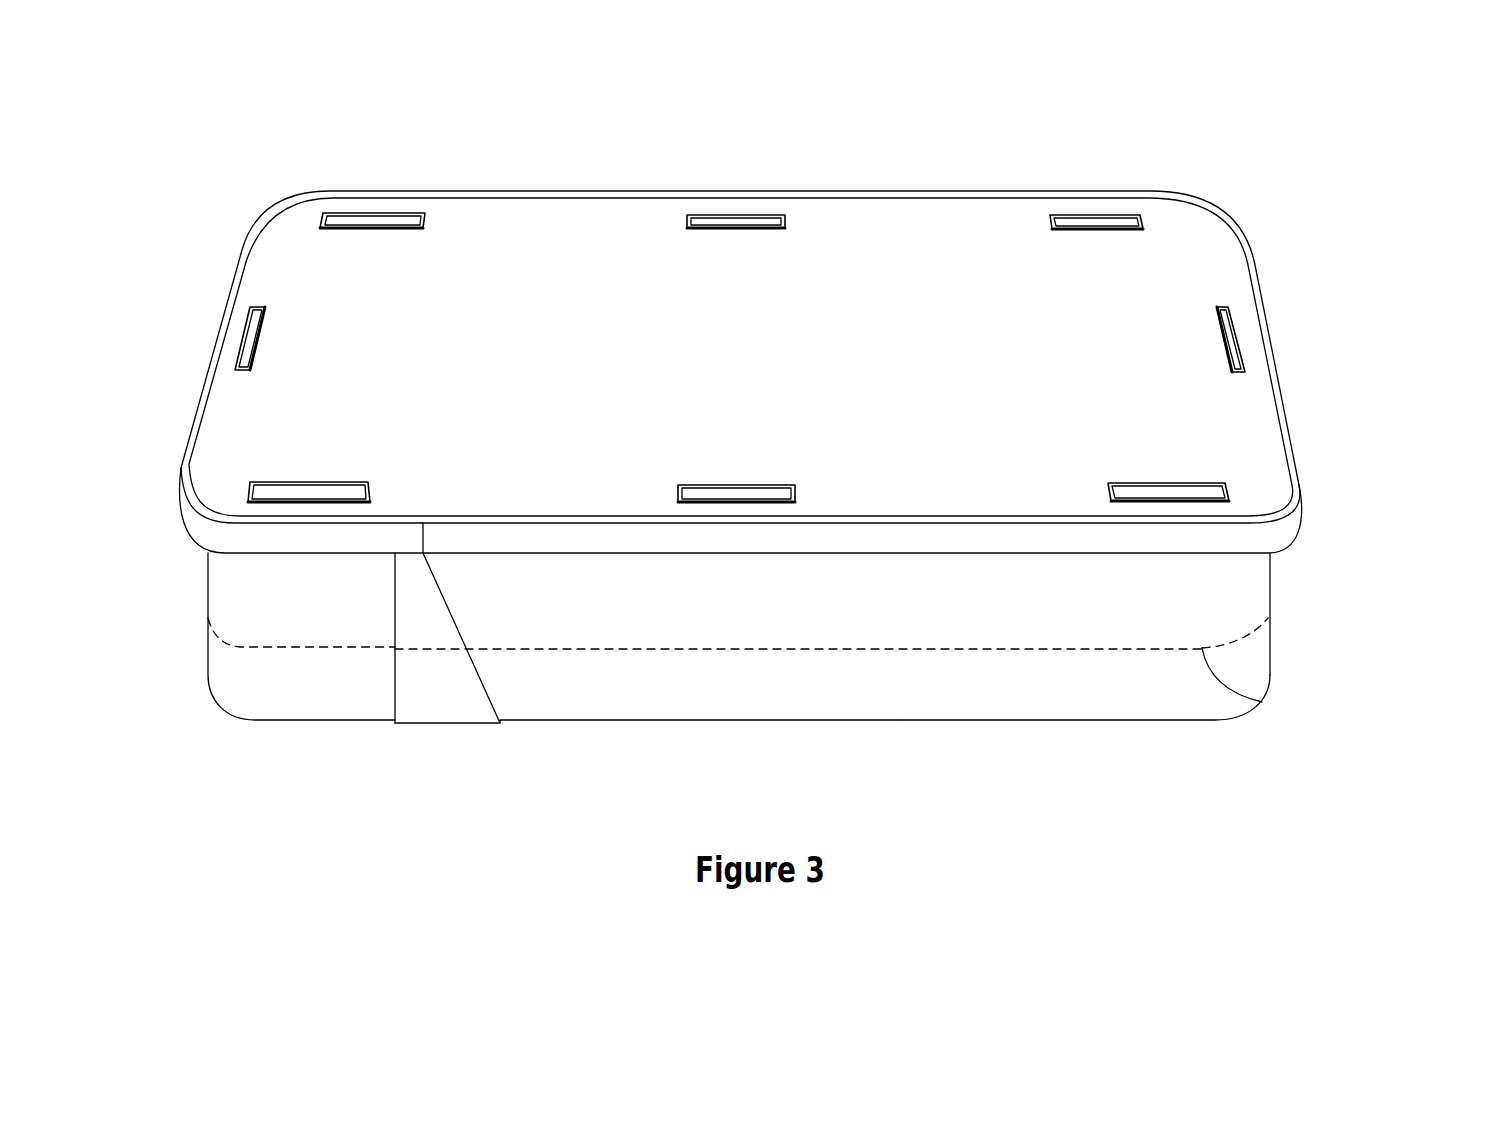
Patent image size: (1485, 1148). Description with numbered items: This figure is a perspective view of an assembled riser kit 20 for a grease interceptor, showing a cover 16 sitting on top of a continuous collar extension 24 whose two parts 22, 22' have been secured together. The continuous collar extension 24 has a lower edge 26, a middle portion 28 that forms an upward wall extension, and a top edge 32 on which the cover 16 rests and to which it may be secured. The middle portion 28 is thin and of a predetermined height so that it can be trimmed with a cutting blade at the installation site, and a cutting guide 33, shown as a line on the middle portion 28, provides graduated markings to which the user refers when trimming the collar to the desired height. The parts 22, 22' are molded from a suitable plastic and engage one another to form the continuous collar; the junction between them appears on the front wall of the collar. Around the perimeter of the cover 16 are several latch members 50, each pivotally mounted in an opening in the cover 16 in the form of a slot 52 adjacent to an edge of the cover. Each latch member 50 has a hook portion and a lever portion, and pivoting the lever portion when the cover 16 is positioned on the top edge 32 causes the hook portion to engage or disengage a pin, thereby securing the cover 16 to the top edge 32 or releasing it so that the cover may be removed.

The cover 16 is at (923, 222).
The riser kit 20 is at (1352, 306).
The part of continuous collar extension 22 is at (301, 679).
The part of continuous collar extension 22' is at (647, 679).
The continuous collar extension 24 is at (207, 630).
The lower edge 26 is at (1203, 720).
The middle portion 28 is at (1268, 628).
The top edge 32 is at (1303, 497).
The cutting guide 33 is at (1262, 702).
The latch member 50 is at (358, 220).
The slot 52 is at (398, 228).